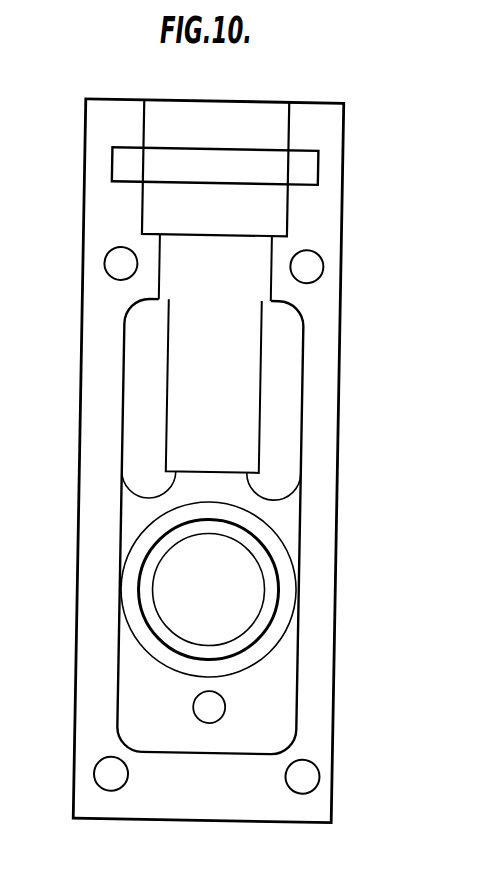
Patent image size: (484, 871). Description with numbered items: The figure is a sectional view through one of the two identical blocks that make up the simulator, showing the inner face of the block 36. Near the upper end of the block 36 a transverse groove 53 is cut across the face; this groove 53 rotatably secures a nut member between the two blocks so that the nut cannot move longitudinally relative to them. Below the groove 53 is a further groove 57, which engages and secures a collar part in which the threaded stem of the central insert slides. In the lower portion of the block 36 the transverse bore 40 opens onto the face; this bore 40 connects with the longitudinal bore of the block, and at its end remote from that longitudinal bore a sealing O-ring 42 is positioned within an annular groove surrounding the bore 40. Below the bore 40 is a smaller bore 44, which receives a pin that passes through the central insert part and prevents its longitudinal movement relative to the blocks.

The block 36 is at (317, 478).
The groove 57 is at (172, 198).
The groove 53 is at (307, 167).
The transverse bore 40 is at (235, 588).
The sealing O-ring 42 is at (268, 641).
The bore 44 is at (210, 713).